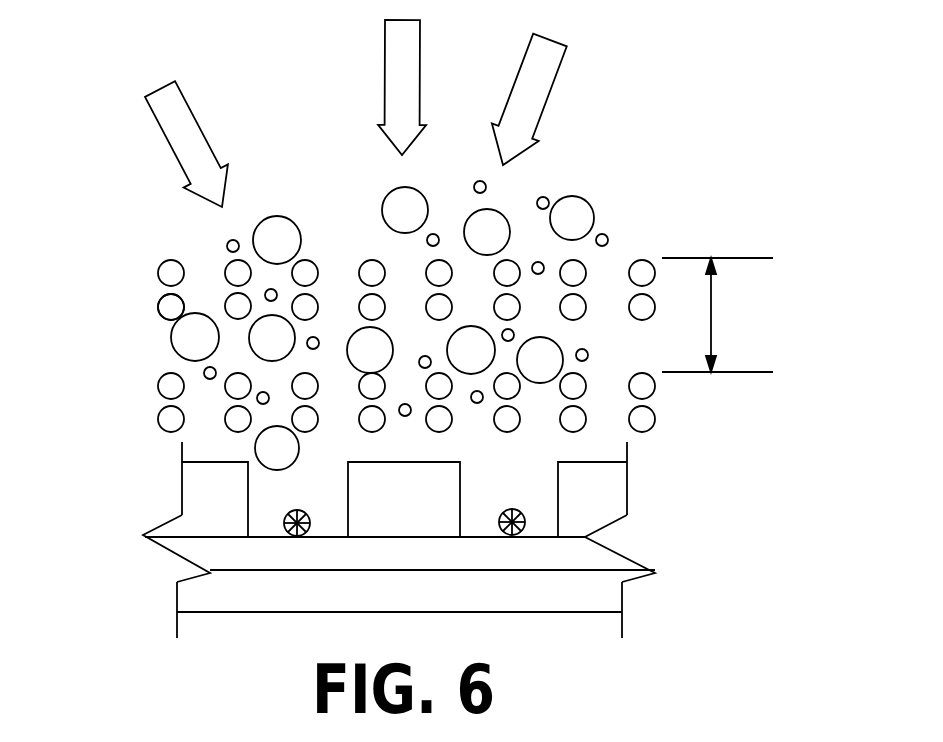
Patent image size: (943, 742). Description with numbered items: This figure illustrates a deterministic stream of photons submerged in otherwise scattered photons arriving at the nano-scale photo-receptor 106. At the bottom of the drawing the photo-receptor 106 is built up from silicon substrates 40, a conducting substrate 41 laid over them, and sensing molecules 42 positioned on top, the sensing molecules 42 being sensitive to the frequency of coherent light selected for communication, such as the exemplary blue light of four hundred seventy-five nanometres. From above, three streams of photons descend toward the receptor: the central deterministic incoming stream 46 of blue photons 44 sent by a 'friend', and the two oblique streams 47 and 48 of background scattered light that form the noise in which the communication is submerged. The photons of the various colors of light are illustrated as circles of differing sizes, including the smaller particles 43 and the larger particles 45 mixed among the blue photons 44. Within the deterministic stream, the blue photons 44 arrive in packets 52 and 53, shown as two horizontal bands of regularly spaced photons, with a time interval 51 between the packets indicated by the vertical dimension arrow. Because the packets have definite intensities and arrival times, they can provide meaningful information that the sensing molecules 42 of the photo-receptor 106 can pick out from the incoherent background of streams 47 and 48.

The silicon substrate 40 is at (426, 514).
The conducting substrate 41 is at (220, 552).
The sensing molecules 42 is at (285, 517).
The small particle 43 is at (226, 246).
The blue photons 44 is at (158, 307).
The large particle 45 is at (595, 205).
The deterministic incoming stream 46 is at (377, 87).
The incoming stream of scattered light 47 is at (198, 144).
The incoming stream of scattered light 48 is at (549, 99).
The time interval 51 is at (737, 315).
The packet 52 is at (742, 261).
The packet 53 is at (742, 375).
The nano-scale photo-receptor 106 is at (116, 638).